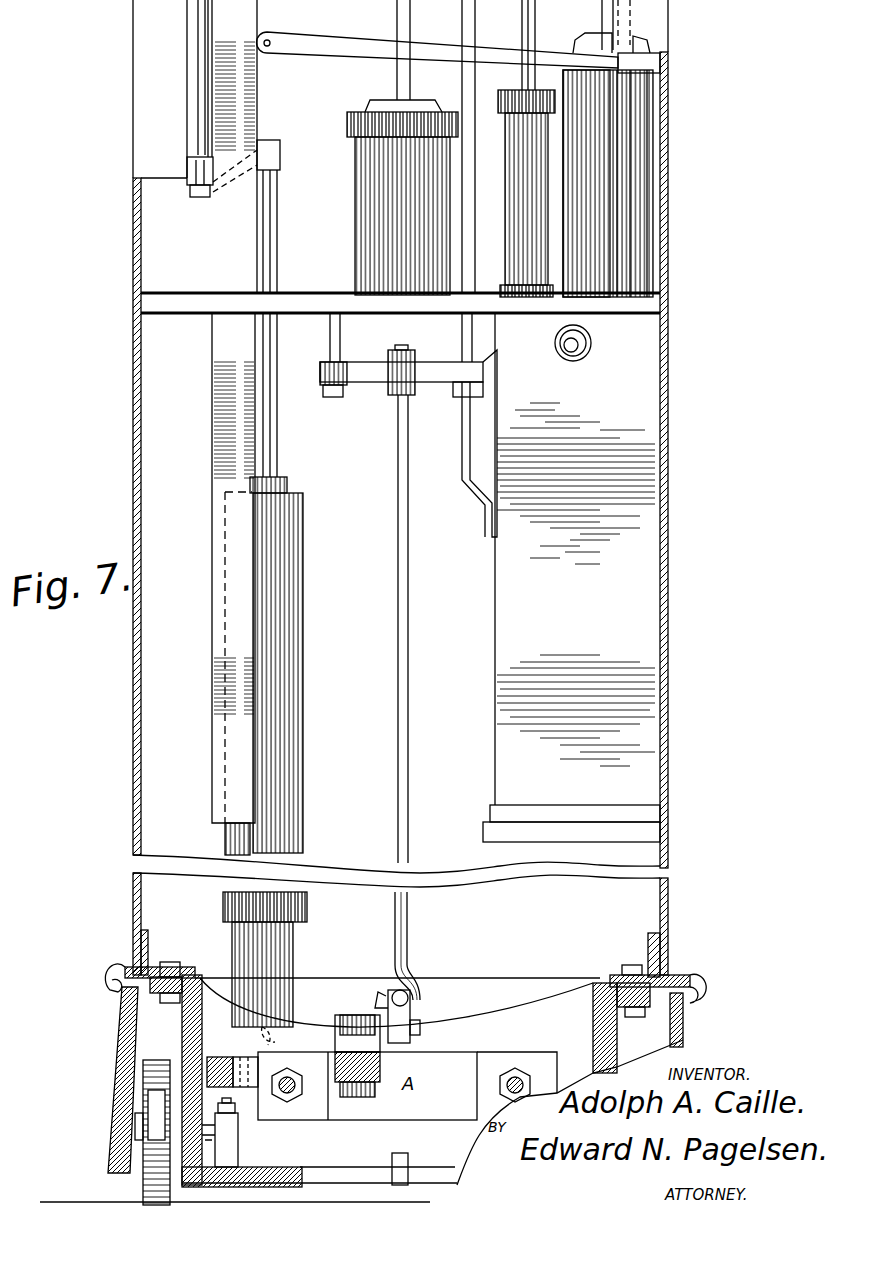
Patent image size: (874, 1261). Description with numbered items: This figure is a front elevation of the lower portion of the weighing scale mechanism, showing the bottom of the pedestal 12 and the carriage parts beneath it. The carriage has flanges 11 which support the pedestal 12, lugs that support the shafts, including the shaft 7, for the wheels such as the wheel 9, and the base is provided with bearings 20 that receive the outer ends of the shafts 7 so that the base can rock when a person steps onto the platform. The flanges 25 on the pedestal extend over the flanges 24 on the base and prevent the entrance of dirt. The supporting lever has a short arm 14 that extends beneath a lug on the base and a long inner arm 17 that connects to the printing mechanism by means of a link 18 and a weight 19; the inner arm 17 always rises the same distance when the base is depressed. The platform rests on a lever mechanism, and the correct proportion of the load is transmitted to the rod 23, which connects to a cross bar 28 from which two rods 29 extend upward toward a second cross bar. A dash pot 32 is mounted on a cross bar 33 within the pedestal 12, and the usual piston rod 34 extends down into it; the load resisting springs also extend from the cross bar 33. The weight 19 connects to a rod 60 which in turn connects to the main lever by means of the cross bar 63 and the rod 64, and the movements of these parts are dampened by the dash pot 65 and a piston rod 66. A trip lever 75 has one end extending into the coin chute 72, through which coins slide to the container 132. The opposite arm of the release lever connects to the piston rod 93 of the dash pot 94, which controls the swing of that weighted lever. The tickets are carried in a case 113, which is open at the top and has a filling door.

The shaft 7 is at (205, 1138).
The wheel 9 is at (157, 1062).
The flange 11 is at (196, 1010).
The pedestal 12 is at (133, 826).
The short arm 14 is at (232, 1125).
The long inner arm 17 is at (220, 1058).
The link 18 is at (272, 1043).
The weight 19 is at (290, 755).
The bearing 20 is at (136, 1120).
The rod 23 is at (408, 946).
The flange 24 is at (124, 1013).
The flange 25 is at (112, 982).
The cross bar 28 is at (378, 380).
The rods 29 is at (341, 333).
The dash pot 32 is at (402, 197).
The cross bar 33 is at (400, 303).
The piston rod 34 is at (410, 78).
The rod 60 is at (278, 438).
The cross bar 63 is at (197, 183).
The rod 64 is at (200, 86).
The dash pot 65 is at (588, 183).
The piston rod 66 is at (602, 15).
The coin chute 72 is at (630, 192).
The trip lever 75 is at (490, 60).
The piston rod 93 is at (536, 28).
The dash pot 94 is at (507, 202).
The case 113 is at (214, 383).
The container 132 is at (571, 577).